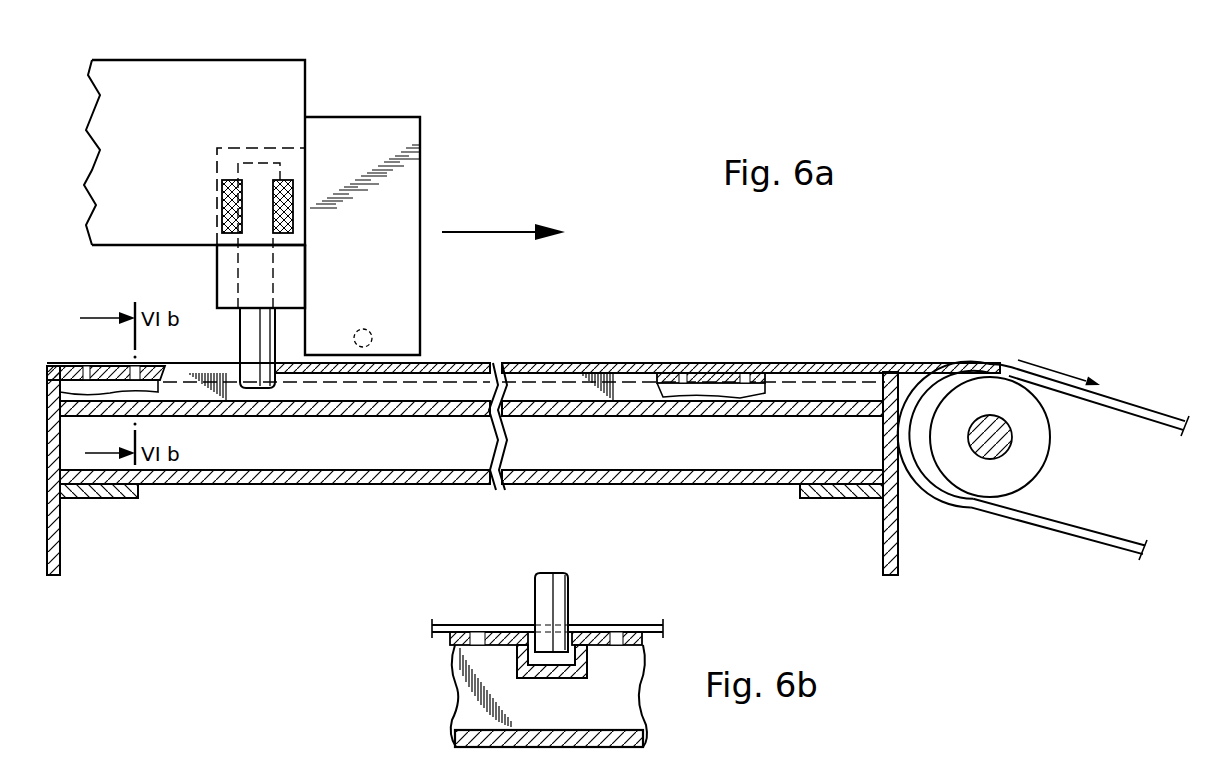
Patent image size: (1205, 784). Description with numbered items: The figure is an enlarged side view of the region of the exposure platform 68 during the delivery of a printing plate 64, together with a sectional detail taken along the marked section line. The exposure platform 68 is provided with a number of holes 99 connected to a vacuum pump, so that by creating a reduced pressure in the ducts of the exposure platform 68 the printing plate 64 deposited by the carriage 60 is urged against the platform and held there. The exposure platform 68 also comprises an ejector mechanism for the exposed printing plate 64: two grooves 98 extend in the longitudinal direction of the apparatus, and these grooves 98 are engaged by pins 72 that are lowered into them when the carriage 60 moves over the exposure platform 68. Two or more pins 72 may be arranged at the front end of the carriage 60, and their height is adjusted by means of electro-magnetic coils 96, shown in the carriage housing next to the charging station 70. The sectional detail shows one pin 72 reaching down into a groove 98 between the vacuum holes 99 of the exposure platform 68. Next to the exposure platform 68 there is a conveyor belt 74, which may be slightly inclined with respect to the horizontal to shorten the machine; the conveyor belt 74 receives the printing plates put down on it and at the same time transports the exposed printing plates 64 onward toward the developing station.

In FIG. 6a, the carriage 60 is at (212, 50).
In FIG. 6a, the printing plate 64 is at (918, 364).
In FIG. 6a, the exposure platform 68 is at (612, 322).
In FIG. 6b, the exposure platform 68 is at (447, 661).
In FIG. 6a, the charging station 70 is at (420, 298).
In FIG. 6a, the pins 72 is at (247, 347).
In FIG. 6b, the pins 72 is at (558, 595).
In FIG. 6a, the conveyor belt 74 is at (1130, 408).
In FIG. 6a, the electro-magnetic coils 96 is at (222, 205).
In FIG. 6a, the grooves 98 is at (540, 378).
In FIG. 6b, the grooves 98 is at (575, 660).
In FIG. 6a, the holes 99 is at (83, 374).
In FIG. 6b, the holes 99 is at (478, 640).